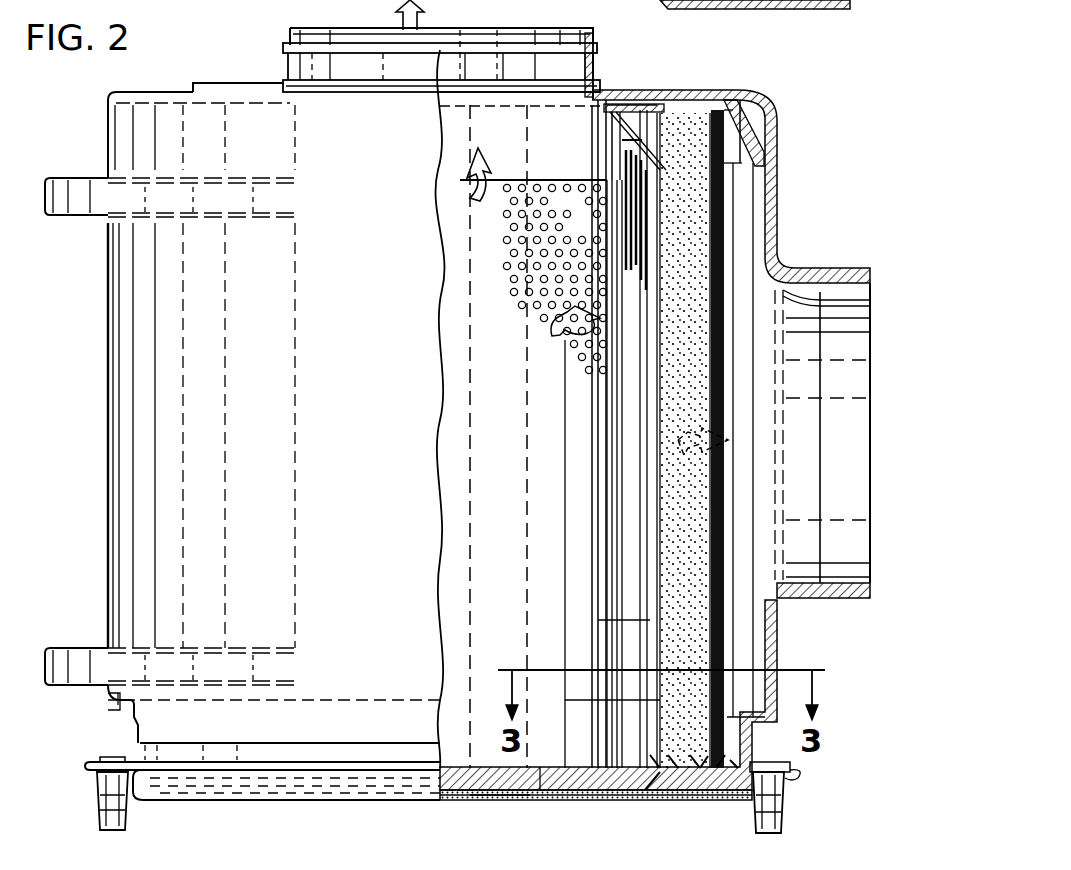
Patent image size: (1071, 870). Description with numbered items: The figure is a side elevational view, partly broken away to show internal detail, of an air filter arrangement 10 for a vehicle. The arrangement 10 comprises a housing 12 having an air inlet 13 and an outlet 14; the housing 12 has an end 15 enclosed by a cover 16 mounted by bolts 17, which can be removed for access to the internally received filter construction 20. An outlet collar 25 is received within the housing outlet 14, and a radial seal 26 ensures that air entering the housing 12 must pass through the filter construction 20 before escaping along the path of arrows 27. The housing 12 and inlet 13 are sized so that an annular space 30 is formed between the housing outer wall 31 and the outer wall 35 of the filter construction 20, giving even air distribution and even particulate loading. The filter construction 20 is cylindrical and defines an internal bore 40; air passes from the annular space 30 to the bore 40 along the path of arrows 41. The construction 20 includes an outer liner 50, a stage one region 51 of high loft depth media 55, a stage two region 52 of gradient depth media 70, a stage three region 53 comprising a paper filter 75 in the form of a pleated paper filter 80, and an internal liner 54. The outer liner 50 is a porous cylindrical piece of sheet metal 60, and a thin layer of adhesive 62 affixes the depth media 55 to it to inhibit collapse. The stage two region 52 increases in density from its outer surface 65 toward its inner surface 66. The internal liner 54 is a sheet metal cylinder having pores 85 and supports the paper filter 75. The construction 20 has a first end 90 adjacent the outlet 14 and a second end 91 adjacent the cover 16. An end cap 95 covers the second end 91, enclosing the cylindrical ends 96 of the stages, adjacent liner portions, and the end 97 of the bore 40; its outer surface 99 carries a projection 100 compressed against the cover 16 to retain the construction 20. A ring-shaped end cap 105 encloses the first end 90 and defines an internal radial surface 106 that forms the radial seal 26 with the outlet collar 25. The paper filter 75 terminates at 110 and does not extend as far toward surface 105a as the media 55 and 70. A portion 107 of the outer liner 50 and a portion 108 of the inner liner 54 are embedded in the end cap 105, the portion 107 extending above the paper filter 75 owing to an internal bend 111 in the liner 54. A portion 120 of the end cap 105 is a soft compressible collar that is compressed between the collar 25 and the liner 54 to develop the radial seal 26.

The arrangement 10 is at (104, 103).
The housing 12 is at (122, 388).
The air inlet 13 is at (858, 280).
The outlet 14 is at (636, 30).
The end 15 is at (135, 742).
The cover 16 is at (305, 802).
The bolts 17 is at (116, 820).
The filter construction 20 is at (595, 494).
The outlet collar 25 is at (305, 35).
The radial seal 26 is at (607, 152).
The arrows 27 is at (426, 13).
The annular space 30 is at (774, 182).
The housing outer wall 31 is at (774, 213).
The outer wall 35 is at (724, 298).
The internal bore 40 is at (618, 566).
The arrows 41 is at (562, 330).
The outer liner 50 is at (724, 327).
The stage 1 region 51 is at (690, 364).
The stage 2 region 52 is at (650, 453).
The stage 3 region 53 is at (635, 530).
The internal liner 54 is at (618, 404).
The depth media 55 is at (690, 140).
The sheet metal 60 is at (720, 521).
The layer of adhesive 62 is at (724, 277).
The outer surface 65 is at (650, 330).
The inner surface 66 is at (644, 386).
The depth media 70 is at (648, 626).
The paper filter 75 is at (632, 591).
The pleated paper filter 80 is at (635, 704).
The pores 85 is at (503, 266).
The first end 90 is at (768, 102).
The second end 91 is at (600, 798).
The end cap 95 is at (520, 796).
The cylindrical ends 96 is at (712, 797).
The end 97 is at (558, 800).
The outer surface 99 is at (470, 800).
The projection 100 is at (650, 800).
The end cap 105 is at (692, 94).
The surface 105a is at (690, 120).
The internal radial surface 106 is at (607, 92).
The portion of outer liner 107 is at (740, 97).
The portion of inner liner 108 is at (604, 102).
The termination 110 is at (628, 212).
The internal bend 111 is at (640, 236).
The portion of end cap 120 is at (610, 130).